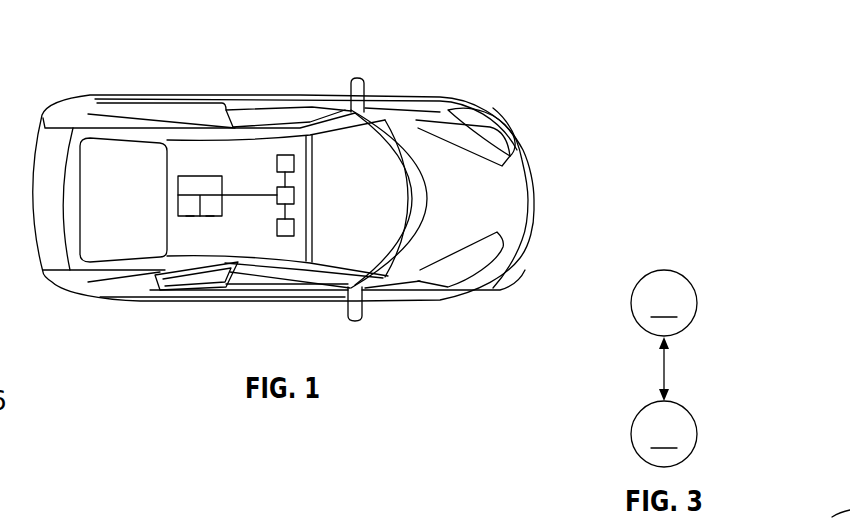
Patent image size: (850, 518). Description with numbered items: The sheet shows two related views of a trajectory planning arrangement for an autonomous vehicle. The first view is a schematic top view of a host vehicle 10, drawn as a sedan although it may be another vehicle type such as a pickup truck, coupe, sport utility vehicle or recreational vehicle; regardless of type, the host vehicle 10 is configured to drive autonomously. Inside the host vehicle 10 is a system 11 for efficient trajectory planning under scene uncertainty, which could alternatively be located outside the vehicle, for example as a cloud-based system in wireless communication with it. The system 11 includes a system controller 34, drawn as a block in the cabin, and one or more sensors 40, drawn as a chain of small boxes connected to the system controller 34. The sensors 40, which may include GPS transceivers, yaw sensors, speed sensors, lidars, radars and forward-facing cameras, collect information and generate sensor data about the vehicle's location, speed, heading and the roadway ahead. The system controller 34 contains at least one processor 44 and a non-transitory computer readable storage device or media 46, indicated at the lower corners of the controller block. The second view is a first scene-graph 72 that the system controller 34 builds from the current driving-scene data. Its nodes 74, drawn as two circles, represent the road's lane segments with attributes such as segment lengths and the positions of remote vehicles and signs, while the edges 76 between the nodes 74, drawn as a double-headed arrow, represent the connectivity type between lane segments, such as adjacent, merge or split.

In FIG. 1, the host vehicle 10 is at (430, 106).
In FIG. 1, the system 11 is at (254, 148).
In FIG. 1, the system controller 34 is at (200, 176).
In FIG. 1, the sensors 40 is at (294, 163).
In FIG. 1, the processor 44 is at (190, 216).
In FIG. 1, the non-transitory computer readable storage device or media 46 is at (210, 216).
In FIG. 3, the first scene-graph 72 is at (735, 333).
In FIG. 3, the nodes 74 is at (664, 368).
In FIG. 3, the edges 76 is at (675, 366).